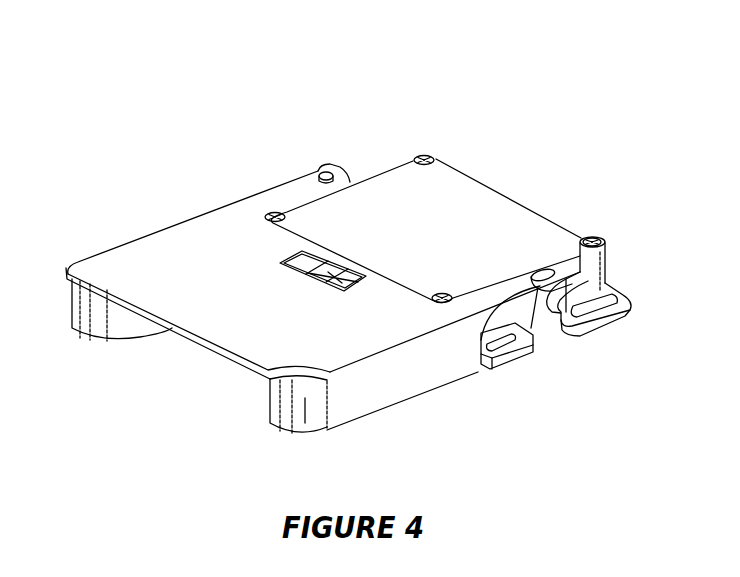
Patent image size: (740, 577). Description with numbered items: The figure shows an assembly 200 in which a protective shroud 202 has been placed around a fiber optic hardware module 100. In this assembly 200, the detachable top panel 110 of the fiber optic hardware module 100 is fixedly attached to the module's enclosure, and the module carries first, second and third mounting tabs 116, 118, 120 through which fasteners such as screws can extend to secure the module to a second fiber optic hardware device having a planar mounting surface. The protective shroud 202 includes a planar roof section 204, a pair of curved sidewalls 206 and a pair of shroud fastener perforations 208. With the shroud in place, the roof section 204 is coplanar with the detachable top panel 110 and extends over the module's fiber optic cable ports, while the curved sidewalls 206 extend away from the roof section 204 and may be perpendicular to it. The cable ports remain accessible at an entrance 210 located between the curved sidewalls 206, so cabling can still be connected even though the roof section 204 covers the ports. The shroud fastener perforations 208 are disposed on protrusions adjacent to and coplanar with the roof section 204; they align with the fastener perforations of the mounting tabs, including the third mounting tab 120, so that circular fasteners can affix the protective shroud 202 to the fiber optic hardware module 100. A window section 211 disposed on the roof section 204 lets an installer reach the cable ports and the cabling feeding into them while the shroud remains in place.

The assembly 200 is at (217, 74).
The protective shroud 202 is at (138, 243).
The planar roof section 204 is at (213, 225).
The curved sidewalls 206 is at (113, 330).
The shroud fastener perforations 208 is at (348, 160).
The entrance 210 is at (163, 394).
The window section 211 is at (316, 262).
The detachable top panel 110 is at (507, 207).
The fiber optic hardware module 100 is at (607, 267).
The third mounting tab 120 is at (605, 280).
The second mounting tab 118 is at (630, 315).
The first mounting tab 116 is at (507, 358).